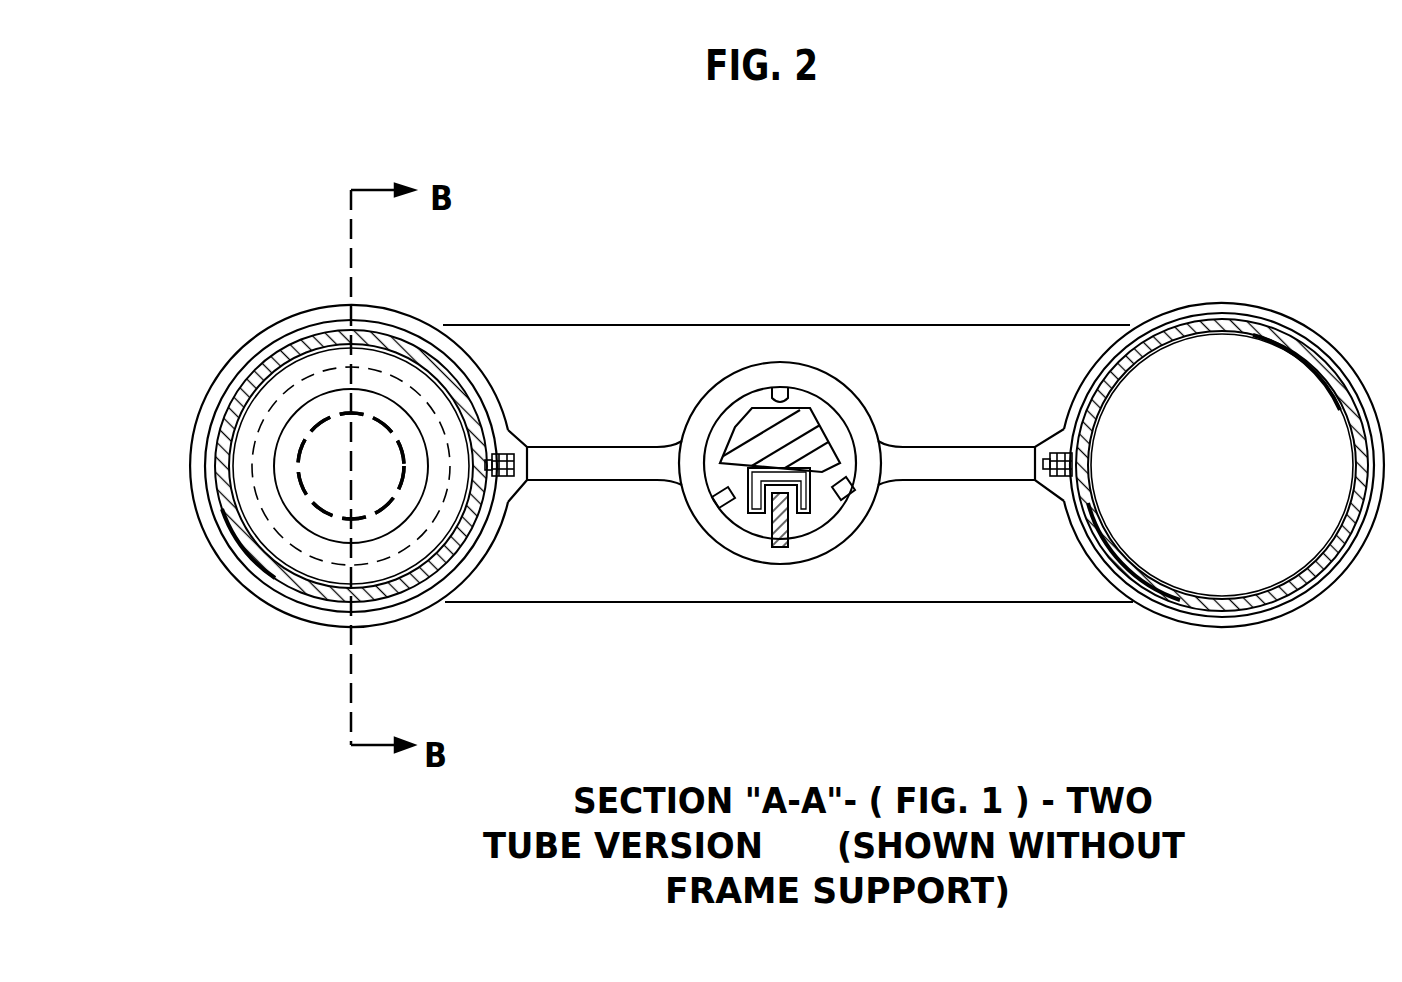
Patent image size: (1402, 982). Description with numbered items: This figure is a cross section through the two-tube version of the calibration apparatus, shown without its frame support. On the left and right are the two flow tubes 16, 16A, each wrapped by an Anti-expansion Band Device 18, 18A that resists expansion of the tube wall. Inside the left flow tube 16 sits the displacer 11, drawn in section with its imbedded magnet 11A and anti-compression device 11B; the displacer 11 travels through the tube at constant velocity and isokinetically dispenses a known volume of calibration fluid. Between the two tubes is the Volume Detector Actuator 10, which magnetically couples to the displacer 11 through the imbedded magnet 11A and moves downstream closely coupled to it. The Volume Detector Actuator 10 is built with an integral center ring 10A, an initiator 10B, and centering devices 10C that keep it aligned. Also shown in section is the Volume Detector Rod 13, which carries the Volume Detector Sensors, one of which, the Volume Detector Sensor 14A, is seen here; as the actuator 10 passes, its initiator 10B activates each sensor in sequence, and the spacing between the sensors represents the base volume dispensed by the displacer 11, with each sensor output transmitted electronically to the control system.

The Volume Detector Actuator 10 is at (1042, 410).
The center ring 10A is at (770, 344).
The initiator 10B is at (776, 564).
The centering devices 10C is at (865, 511).
The displacer 11 is at (411, 566).
The imbedded magnet 11A is at (328, 534).
The anti-compression device 11B is at (351, 466).
The Volume Detector Rod 13 is at (812, 458).
The Volume Detector Sensor 14A is at (749, 517).
The flow tube 16 is at (410, 318).
The flow tube 16A is at (1175, 319).
The Anti-expansion Band Device 18 is at (442, 324).
The Anti-expansion Band Device 18A is at (1101, 330).